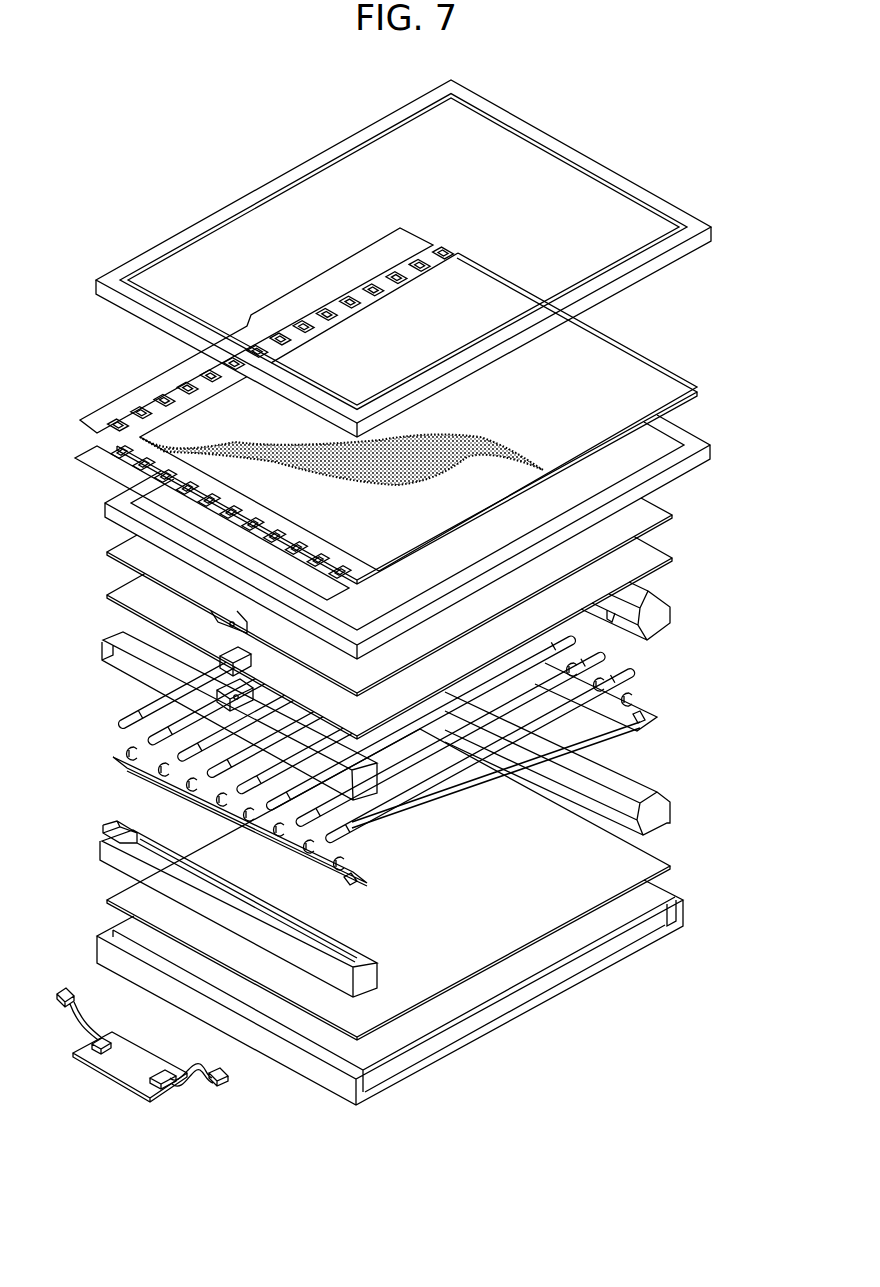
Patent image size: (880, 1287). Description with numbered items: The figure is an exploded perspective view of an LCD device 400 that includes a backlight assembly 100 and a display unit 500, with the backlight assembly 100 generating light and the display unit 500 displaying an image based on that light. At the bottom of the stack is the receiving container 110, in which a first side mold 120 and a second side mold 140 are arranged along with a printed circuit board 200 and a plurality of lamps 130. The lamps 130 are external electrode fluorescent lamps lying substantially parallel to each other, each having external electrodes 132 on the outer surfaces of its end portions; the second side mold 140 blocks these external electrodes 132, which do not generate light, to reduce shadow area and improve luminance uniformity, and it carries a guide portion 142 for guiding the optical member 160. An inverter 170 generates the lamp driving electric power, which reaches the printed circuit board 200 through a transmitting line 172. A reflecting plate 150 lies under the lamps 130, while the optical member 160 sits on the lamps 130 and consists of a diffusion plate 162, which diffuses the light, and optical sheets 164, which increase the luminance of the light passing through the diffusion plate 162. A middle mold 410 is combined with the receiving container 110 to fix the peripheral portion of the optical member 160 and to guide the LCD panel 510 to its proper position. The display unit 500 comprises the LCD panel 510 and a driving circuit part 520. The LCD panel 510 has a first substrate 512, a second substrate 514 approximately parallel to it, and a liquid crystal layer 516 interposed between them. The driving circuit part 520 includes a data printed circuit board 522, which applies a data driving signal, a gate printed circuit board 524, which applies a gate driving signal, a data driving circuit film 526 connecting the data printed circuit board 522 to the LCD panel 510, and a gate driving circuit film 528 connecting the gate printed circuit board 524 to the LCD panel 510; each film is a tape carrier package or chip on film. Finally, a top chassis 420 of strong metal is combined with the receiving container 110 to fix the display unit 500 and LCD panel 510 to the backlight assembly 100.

The backlight assembly 100 is at (410, 751).
The receiving container 110 is at (84, 944).
The first side mold 120 is at (100, 815).
The lamps 130 is at (459, 792).
The external electrodes 132 is at (622, 668).
The second side mold 140 is at (105, 631).
The guide portion 142 is at (248, 698).
The reflecting plate 150 is at (110, 898).
The optical member 160 is at (355, 618).
The diffusion plate 162 is at (116, 593).
The optical sheets 164 is at (128, 552).
The inverter 170 is at (108, 1067).
The transmitting line 172 is at (74, 998).
The printed circuit board 200 is at (112, 738).
The LCD device 400 is at (371, 78).
The middle mold 410 is at (693, 442).
The top chassis 420 is at (708, 224).
The display unit 500 is at (400, 414).
The LCD panel 510 is at (426, 418).
The first substrate 512 is at (437, 518).
The second substrate 514 is at (688, 382).
The liquid crystal layer 516 is at (467, 433).
The driving circuit part 520 is at (259, 414).
The data printed circuit board 522 is at (268, 312).
The gate printed circuit board 524 is at (218, 527).
The data driving circuit film 526 is at (318, 302).
The gate driving circuit film 528 is at (172, 463).